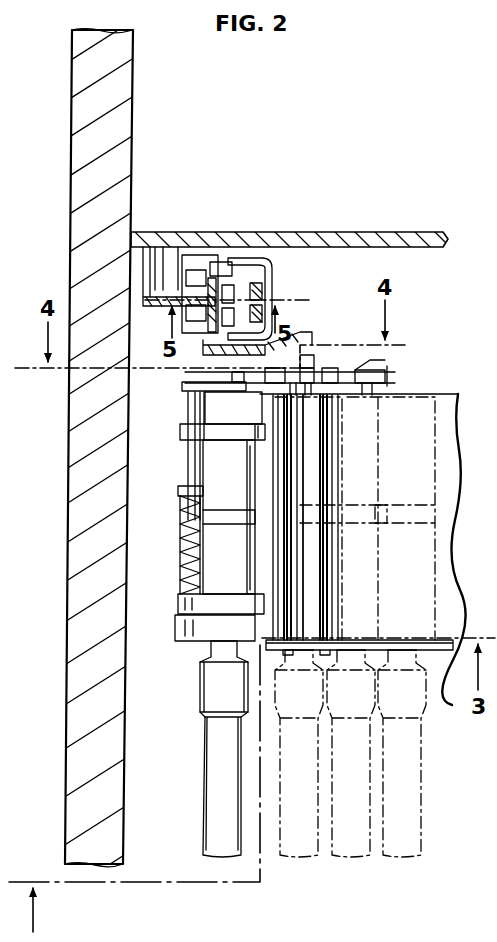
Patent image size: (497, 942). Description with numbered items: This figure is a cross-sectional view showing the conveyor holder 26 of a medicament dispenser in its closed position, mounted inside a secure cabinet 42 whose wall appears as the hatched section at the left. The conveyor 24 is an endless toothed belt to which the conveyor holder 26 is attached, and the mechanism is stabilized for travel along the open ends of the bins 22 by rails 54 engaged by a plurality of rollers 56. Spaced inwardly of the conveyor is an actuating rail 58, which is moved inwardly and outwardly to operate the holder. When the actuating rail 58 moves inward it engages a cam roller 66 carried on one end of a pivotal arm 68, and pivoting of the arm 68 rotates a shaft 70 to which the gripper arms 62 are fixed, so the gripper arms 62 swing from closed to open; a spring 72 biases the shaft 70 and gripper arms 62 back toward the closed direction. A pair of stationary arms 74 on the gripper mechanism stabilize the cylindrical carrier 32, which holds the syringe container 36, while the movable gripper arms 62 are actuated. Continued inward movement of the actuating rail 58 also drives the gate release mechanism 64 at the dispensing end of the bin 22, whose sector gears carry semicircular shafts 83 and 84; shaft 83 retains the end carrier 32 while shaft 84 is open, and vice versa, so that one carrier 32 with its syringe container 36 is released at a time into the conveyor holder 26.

The bin 22 is at (365, 690).
The conveyor 24 is at (262, 300).
The conveyor holder 26 is at (198, 614).
The carrier 32 is at (212, 537).
The syringe container 36 is at (209, 785).
The cabinet 42 is at (69, 479).
The rail 54 is at (165, 306).
The roller 56 is at (232, 274).
The actuating rail 58 is at (298, 346).
The gripper arm 62 is at (205, 434).
The gate release mechanism 64 is at (392, 378).
The cam roller 66 is at (210, 398).
The pivotal arm 68 is at (184, 385).
The shaft 70 is at (180, 494).
The spring 72 is at (185, 559).
The stationary arm 74 is at (233, 408).
The shaft 83 is at (296, 597).
The shaft 84 is at (335, 555).